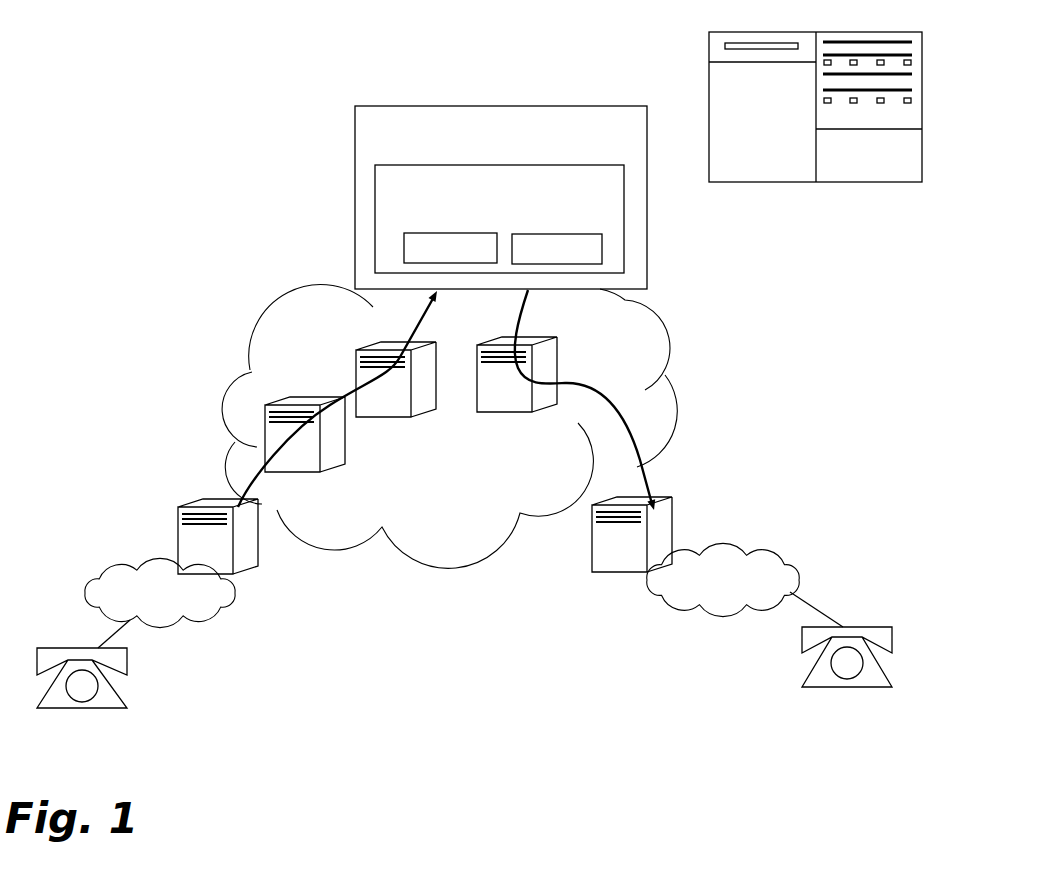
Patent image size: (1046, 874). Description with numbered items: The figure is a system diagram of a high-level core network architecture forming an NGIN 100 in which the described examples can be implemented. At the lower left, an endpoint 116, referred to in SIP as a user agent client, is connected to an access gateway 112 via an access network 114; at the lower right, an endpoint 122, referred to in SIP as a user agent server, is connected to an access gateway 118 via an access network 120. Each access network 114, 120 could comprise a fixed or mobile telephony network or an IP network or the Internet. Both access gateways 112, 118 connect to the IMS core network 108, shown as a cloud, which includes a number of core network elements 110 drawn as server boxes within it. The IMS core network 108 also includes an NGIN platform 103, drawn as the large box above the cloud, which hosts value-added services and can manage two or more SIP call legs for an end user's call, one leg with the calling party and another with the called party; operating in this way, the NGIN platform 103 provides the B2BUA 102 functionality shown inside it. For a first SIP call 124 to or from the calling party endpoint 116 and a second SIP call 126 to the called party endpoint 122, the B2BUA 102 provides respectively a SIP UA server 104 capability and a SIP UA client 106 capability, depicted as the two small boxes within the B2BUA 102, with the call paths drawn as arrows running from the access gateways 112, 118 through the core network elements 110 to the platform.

The NGIN 100 is at (112, 97).
The B2BUA 102 is at (375, 180).
The NGIN platform 103 is at (360, 117).
The SIP UA server 104 is at (420, 244).
The SIP UA client 106 is at (600, 246).
The IMS core network 108 is at (653, 334).
The core network elements 110 is at (490, 403).
The access gateway 112 is at (183, 533).
The access network 114 is at (227, 597).
The endpoint 116 is at (127, 672).
The access gateway 118 is at (672, 513).
The access network 120 is at (675, 603).
The endpoint 122 is at (820, 670).
The first SIP call 124 is at (253, 473).
The second SIP call 126 is at (635, 435).